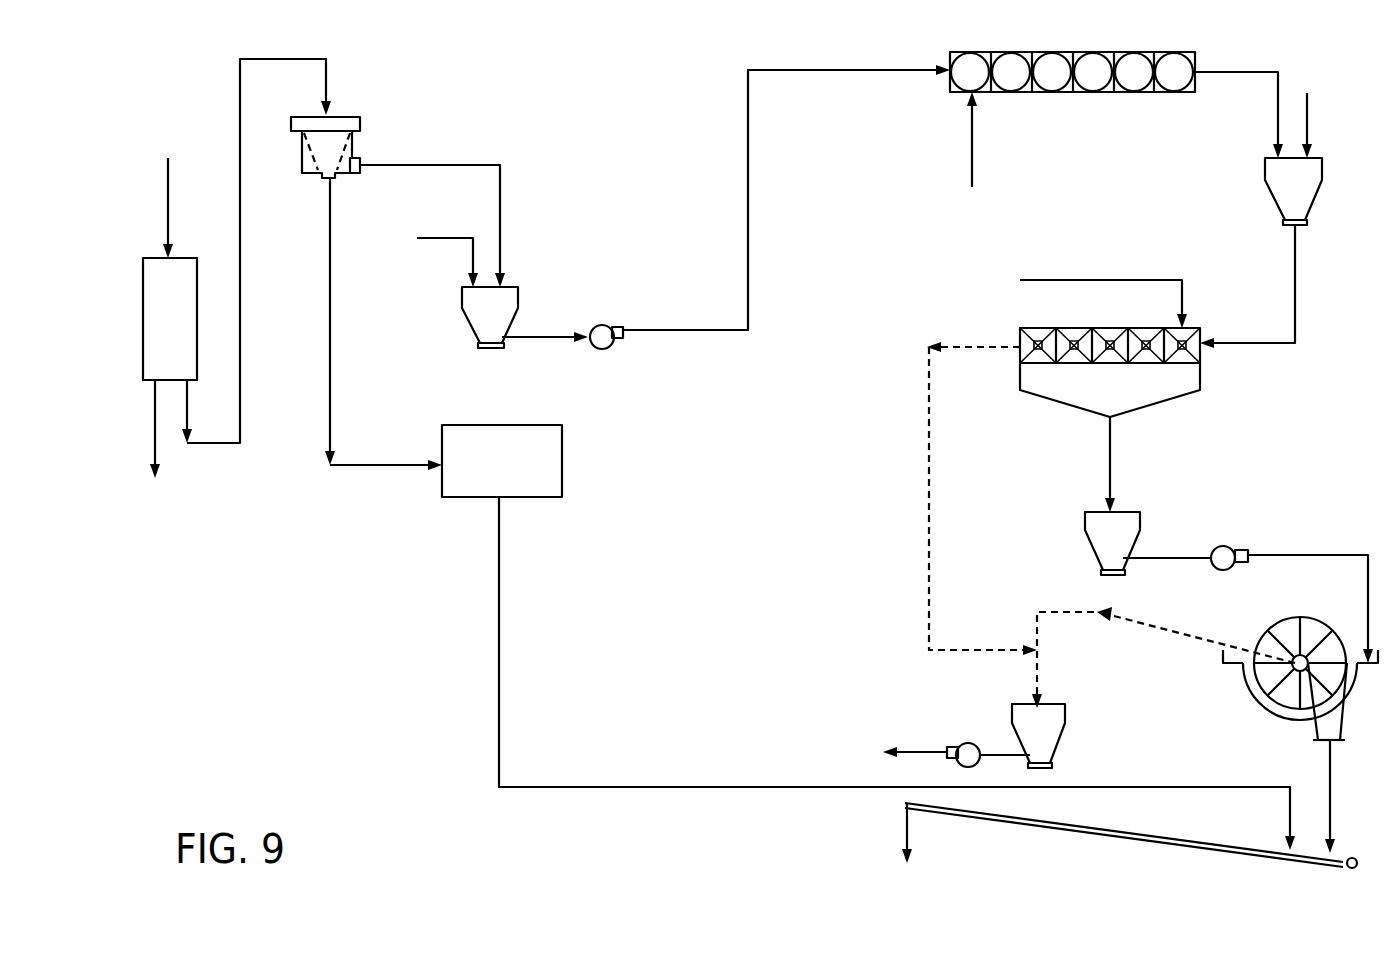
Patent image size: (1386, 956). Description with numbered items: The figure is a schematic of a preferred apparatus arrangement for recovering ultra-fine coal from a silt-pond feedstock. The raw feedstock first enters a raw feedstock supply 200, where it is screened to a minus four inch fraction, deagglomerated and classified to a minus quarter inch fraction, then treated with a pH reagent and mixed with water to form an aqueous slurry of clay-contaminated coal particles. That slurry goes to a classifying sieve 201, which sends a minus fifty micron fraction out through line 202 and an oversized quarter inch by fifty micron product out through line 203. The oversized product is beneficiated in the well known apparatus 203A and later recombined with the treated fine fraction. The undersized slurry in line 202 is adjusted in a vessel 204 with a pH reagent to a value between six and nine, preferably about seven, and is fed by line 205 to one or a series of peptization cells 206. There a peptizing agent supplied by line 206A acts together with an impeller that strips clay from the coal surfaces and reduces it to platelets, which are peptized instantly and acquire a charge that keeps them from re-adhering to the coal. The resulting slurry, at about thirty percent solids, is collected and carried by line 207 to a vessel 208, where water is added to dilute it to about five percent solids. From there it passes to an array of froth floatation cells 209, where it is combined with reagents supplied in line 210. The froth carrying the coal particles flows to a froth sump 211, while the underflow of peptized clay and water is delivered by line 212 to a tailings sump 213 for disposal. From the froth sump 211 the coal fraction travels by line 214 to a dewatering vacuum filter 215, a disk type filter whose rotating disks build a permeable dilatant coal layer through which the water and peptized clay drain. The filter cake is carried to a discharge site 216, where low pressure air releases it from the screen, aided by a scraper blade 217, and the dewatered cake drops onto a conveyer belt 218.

The raw feedstock supply 200 is at (152, 310).
The sieve 201 is at (355, 124).
The line 202 is at (415, 165).
The line 203 is at (330, 340).
The apparatus 203A is at (562, 438).
The vessel 204 is at (510, 302).
The line 205 is at (744, 228).
The peptization cells 206 is at (1078, 105).
The line 206A is at (972, 153).
The line 207 is at (1232, 70).
The vessel 208 is at (1278, 190).
The froth floatation cells 209 is at (1048, 322).
The line 210 is at (1058, 280).
The froth sump 211 is at (1090, 525).
The line 212 is at (929, 565).
The tailings sump 213 is at (1015, 712).
The line 214 is at (1345, 553).
The vacuum filter 215 is at (1290, 722).
The discharge site 216 is at (1252, 700).
The scraper blade 217 is at (1318, 620).
The conveyer belt 218 is at (1113, 838).